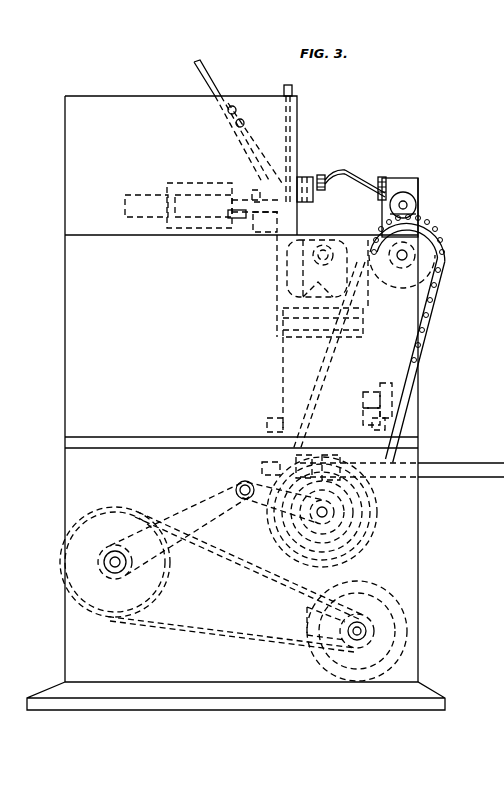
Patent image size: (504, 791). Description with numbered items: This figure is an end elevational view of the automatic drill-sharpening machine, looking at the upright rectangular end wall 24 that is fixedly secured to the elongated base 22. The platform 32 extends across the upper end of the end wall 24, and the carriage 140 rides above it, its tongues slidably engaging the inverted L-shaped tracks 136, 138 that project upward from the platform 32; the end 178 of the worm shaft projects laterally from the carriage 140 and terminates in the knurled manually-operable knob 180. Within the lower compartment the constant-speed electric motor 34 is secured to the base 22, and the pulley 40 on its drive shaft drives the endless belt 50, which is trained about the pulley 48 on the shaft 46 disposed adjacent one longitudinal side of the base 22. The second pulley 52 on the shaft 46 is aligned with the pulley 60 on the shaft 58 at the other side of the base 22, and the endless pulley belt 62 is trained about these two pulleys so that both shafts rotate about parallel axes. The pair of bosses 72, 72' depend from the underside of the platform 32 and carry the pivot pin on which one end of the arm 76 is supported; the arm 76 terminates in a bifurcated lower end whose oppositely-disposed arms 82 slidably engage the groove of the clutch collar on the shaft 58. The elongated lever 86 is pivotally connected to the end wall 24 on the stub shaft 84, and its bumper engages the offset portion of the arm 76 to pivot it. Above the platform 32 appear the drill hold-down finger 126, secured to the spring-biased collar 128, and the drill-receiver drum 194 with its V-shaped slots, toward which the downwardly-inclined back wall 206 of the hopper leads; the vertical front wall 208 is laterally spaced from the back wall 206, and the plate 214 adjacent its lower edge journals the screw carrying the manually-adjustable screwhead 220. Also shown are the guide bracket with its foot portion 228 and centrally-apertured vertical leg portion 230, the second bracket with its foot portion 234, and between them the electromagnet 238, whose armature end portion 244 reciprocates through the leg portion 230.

The base 22 is at (396, 703).
The end wall 24 is at (65, 490).
The platform 32 is at (190, 437).
The electric motor 34 is at (412, 630).
The pulley 40 is at (306, 622).
The shaft 46 is at (110, 563).
The pulley 48 is at (165, 598).
The endless belt 50 is at (225, 636).
The second pulley 52 is at (130, 560).
The shaft 58 is at (318, 515).
The pulley 60 is at (268, 505).
The endless pulley belt 62 is at (238, 486).
The bosses 72 is at (283, 465).
The clutch member 72' is at (351, 464).
The arm 76 is at (262, 468).
The arms 82 is at (268, 518).
The stub shaft 84 is at (240, 497).
The lever 86 is at (478, 466).
The drill hold-down finger 126 is at (352, 171).
The collar 128 is at (420, 195).
The track 136 is at (264, 422).
The track 138 is at (394, 428).
The carriage 140 is at (282, 372).
The end of worm shaft 178 is at (394, 413).
The knob 180 is at (392, 398).
The drill-receiver drum 194 is at (275, 263).
The back wall 206 is at (197, 85).
The front wall 208 is at (293, 91).
The plate 214 is at (320, 175).
The screwhead 220 is at (336, 172).
The foot portion 228 is at (303, 170).
The leg portion 230 is at (254, 186).
The foot portion 234 is at (143, 195).
The electromagnet 238 is at (205, 185).
The end portion 244 is at (243, 220).